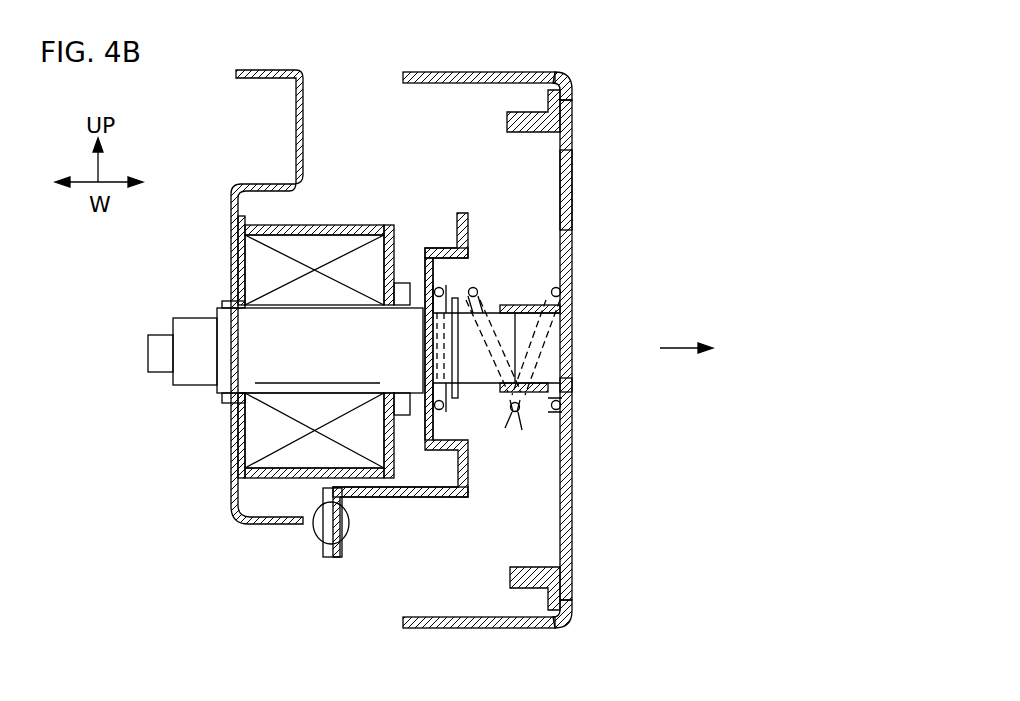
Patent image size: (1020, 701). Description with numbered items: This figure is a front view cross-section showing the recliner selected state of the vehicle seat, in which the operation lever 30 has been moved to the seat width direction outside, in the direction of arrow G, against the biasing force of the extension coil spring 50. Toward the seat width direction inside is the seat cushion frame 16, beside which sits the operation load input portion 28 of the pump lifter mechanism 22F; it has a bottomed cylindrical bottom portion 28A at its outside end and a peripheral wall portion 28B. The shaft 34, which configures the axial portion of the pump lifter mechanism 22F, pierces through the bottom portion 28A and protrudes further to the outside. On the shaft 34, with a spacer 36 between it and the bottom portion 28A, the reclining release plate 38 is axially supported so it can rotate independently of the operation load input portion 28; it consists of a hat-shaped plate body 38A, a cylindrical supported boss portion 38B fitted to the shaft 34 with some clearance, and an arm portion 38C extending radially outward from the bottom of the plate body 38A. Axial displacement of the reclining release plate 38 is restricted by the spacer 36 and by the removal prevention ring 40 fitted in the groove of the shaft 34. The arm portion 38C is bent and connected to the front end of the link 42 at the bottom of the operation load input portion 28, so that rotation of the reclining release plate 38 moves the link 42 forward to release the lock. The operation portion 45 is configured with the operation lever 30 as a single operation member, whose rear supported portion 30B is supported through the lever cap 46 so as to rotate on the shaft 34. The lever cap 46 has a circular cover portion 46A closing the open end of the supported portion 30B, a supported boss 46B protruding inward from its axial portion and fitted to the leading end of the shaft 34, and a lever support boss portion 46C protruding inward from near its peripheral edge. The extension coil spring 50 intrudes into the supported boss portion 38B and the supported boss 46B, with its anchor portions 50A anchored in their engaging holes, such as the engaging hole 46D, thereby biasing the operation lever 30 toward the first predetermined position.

The seat cushion frame 16 is at (262, 74).
The operation load input portion 28 is at (327, 358).
The bottom portion 28A is at (390, 236).
The peripheral wall portion 28B is at (296, 225).
The pump lifter mechanism 22F is at (330, 245).
The spacer 36 is at (400, 290).
The shaft 34 is at (228, 325).
The reclining release plate 38 is at (441, 348).
The plate body 38A is at (466, 246).
The supported boss portion 38B is at (430, 325).
The arm portion 38C is at (394, 498).
The link 42 is at (322, 528).
The operation portion 45 is at (580, 328).
The operation lever 30 is at (493, 72).
The supported portion 30B is at (560, 74).
The lever cap 46 is at (572, 222).
The cover portion 46A is at (571, 194).
The supported boss 46B is at (516, 305).
The lever support boss portion 46C is at (527, 122).
The engaging hole 46D is at (566, 385).
The extension coil spring 50 is at (554, 384).
The anchor portion 50A is at (566, 405).
The removal prevention ring 40 is at (460, 400).